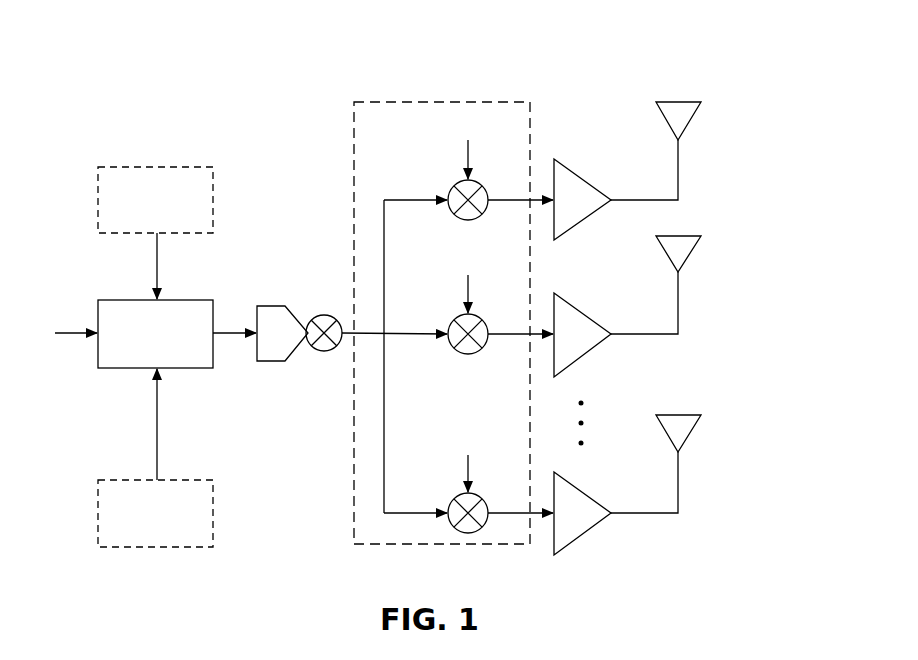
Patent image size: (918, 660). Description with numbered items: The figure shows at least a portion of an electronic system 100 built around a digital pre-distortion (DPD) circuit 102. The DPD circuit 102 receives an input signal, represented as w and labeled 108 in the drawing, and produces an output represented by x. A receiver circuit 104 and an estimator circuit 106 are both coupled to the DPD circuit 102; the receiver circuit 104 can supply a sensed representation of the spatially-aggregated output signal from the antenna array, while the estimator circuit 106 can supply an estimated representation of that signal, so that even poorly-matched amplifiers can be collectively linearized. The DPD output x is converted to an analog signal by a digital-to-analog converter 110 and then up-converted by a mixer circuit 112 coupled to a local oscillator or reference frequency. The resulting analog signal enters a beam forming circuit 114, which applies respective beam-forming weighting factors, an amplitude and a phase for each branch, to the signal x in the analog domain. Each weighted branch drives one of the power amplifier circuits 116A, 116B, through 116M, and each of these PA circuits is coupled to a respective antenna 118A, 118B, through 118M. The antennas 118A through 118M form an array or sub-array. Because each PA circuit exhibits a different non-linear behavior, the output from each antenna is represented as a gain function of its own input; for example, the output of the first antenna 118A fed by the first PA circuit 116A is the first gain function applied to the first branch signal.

The electronic system 100 is at (84, 38).
The digital pre-distortion (DPD) circuit 102 is at (127, 299).
The receiver circuit 104 is at (137, 479).
The estimator circuit 106 is at (161, 166).
The input signal w 108 is at (71, 338).
The digital-to-analog (DAC) converter 110 is at (270, 362).
The mixer circuit 112 is at (326, 352).
The beam forming circuit 114 is at (416, 101).
The power amplifier circuit 116A is at (583, 183).
The power amplifier circuit 116B is at (583, 316).
The power amplifier circuit 116M is at (583, 498).
The antenna 118A is at (682, 101).
The antenna 118B is at (682, 235).
The antenna 118M is at (682, 414).